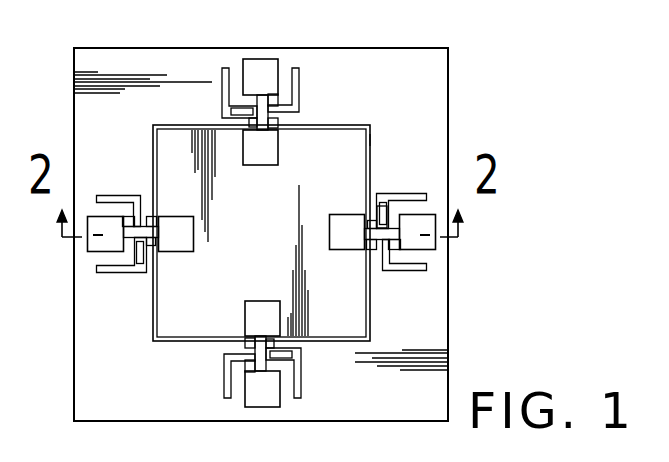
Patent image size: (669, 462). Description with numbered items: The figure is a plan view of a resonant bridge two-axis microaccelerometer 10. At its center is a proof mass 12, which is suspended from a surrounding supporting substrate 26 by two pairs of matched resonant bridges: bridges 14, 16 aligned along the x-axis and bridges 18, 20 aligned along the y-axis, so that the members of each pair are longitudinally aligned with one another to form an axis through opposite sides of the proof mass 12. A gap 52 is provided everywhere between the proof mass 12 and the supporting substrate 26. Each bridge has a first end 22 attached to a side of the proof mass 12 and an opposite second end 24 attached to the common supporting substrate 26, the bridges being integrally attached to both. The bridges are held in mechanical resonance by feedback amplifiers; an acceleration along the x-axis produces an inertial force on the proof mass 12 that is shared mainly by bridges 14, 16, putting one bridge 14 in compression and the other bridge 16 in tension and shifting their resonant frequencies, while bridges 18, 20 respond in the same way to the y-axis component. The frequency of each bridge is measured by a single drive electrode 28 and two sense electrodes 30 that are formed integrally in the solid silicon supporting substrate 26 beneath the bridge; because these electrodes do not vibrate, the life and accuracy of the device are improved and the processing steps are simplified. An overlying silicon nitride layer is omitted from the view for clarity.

The microaccelerometer 10 is at (470, 84).
The proof mass 12 is at (347, 136).
The resonant bridge 14 is at (379, 232).
The resonant bridge 16 is at (123, 237).
The resonant bridge 18 is at (252, 370).
The resonant bridge 20 is at (283, 110).
The first end 22 is at (340, 235).
The second end 24 is at (260, 62).
The supporting substrate 26 is at (415, 327).
The drive electrode 28 is at (250, 112).
The sense electrode 30 is at (283, 124).
The gap 52 is at (370, 140).